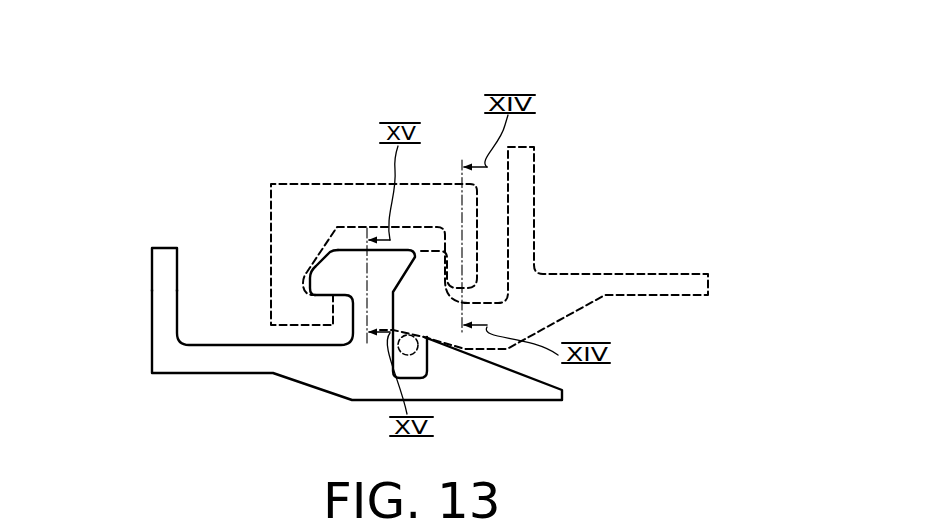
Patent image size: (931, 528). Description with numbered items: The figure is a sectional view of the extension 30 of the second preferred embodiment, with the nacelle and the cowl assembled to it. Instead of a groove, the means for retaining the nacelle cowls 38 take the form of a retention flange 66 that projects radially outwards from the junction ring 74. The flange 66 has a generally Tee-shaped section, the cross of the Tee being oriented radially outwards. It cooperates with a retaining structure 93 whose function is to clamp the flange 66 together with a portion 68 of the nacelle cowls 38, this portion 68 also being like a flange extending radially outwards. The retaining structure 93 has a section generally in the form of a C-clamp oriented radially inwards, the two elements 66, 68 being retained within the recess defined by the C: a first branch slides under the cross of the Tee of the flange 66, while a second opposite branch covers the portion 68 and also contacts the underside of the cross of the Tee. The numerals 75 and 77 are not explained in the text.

The extension 30 is at (192, 220).
The nacelle cowls 38 is at (695, 270).
The retention flange 66 is at (331, 275).
The portion of the nacelle cowls 68 is at (427, 272).
The junction ring 74 is at (218, 358).
The side wall 75 is at (160, 267).
The locking head 77 is at (360, 320).
The retaining structure 93 is at (282, 180).